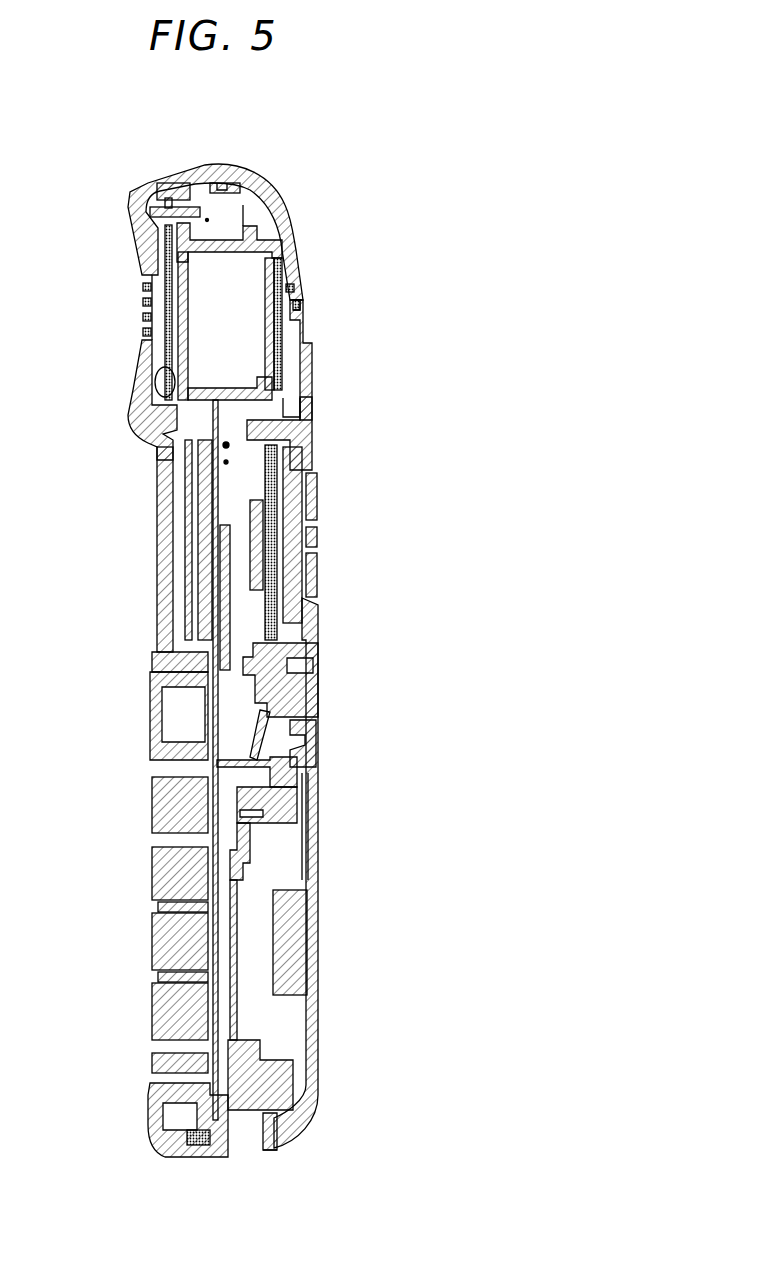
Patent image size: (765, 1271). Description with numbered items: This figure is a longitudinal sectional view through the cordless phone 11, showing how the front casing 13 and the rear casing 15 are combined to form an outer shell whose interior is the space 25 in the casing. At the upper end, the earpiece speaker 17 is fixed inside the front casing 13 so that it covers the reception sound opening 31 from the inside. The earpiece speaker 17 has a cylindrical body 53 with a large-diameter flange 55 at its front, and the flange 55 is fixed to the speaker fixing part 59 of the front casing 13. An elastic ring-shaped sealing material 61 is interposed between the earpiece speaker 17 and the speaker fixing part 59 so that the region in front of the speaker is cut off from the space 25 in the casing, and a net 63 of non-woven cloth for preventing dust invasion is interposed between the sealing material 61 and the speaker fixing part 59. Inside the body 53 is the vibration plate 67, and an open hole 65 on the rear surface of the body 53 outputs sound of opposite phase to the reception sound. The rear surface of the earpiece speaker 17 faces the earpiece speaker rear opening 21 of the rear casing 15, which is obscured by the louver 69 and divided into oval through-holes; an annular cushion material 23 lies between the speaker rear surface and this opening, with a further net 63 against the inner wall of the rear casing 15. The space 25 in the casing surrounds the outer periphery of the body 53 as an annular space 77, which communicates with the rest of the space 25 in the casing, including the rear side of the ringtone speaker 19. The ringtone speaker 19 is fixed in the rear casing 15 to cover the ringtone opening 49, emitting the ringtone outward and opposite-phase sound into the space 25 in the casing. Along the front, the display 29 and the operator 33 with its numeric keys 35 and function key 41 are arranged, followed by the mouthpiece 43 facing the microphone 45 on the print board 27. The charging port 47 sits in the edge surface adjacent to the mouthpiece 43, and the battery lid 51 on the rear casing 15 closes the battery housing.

The cordless phone 11 is at (358, 148).
The front casing 13 is at (130, 430).
The rear casing 15 is at (302, 395).
The earpiece speaker 17 is at (260, 238).
The ringtone speaker 19 is at (250, 578).
The earpiece speaker rear opening 21 is at (322, 287).
The cushion material 23 is at (292, 398).
The space in the casing 25 is at (245, 749).
The print board 27 is at (237, 850).
The display 29 is at (157, 570).
The reception sound opening 31 is at (143, 290).
The operator 33 is at (150, 880).
The numeric key 35 is at (152, 855).
The function key 41 is at (150, 718).
The mouthpiece 43 is at (150, 1113).
The microphone 45 is at (197, 1118).
The charging port 47 is at (268, 1150).
The ringtone opening 49 is at (318, 525).
The battery lid 51 is at (318, 1040).
The body 53 is at (243, 210).
The flange 55 is at (206, 215).
The speaker fixing part 59 is at (163, 380).
The sealing material 61 is at (150, 268).
The net 63 is at (293, 290).
The open hole 65 is at (270, 325).
The vibration plate 67 is at (165, 347).
The louver 69 is at (300, 306).
The annular space 77 is at (248, 205).